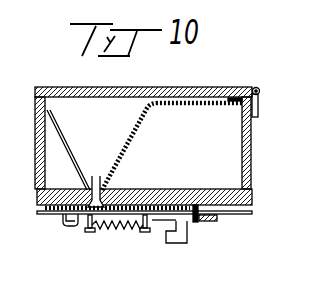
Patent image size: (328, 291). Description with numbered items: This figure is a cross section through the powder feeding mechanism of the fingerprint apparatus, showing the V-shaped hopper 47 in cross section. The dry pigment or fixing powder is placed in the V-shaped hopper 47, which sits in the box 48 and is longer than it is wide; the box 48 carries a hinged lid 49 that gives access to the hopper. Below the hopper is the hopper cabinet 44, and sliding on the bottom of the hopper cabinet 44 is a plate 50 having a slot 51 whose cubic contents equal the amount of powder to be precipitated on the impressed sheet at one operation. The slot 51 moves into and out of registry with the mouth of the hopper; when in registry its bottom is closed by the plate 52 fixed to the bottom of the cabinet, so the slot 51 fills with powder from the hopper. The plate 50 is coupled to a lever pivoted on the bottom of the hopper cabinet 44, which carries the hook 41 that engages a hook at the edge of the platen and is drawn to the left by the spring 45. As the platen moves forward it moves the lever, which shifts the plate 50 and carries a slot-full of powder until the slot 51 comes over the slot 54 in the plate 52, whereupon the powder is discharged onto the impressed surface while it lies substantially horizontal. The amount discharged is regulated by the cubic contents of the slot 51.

The hook 41 is at (168, 243).
The hopper cabinet 44 is at (253, 127).
The spring 45 is at (118, 223).
The V-shaped hopper 47 is at (125, 158).
The box 48 is at (219, 159).
The hinged lid 49 is at (138, 90).
The plate 50 is at (149, 206).
The slot 51 is at (99, 178).
The plate 52 is at (72, 222).
The slot 54 is at (122, 214).